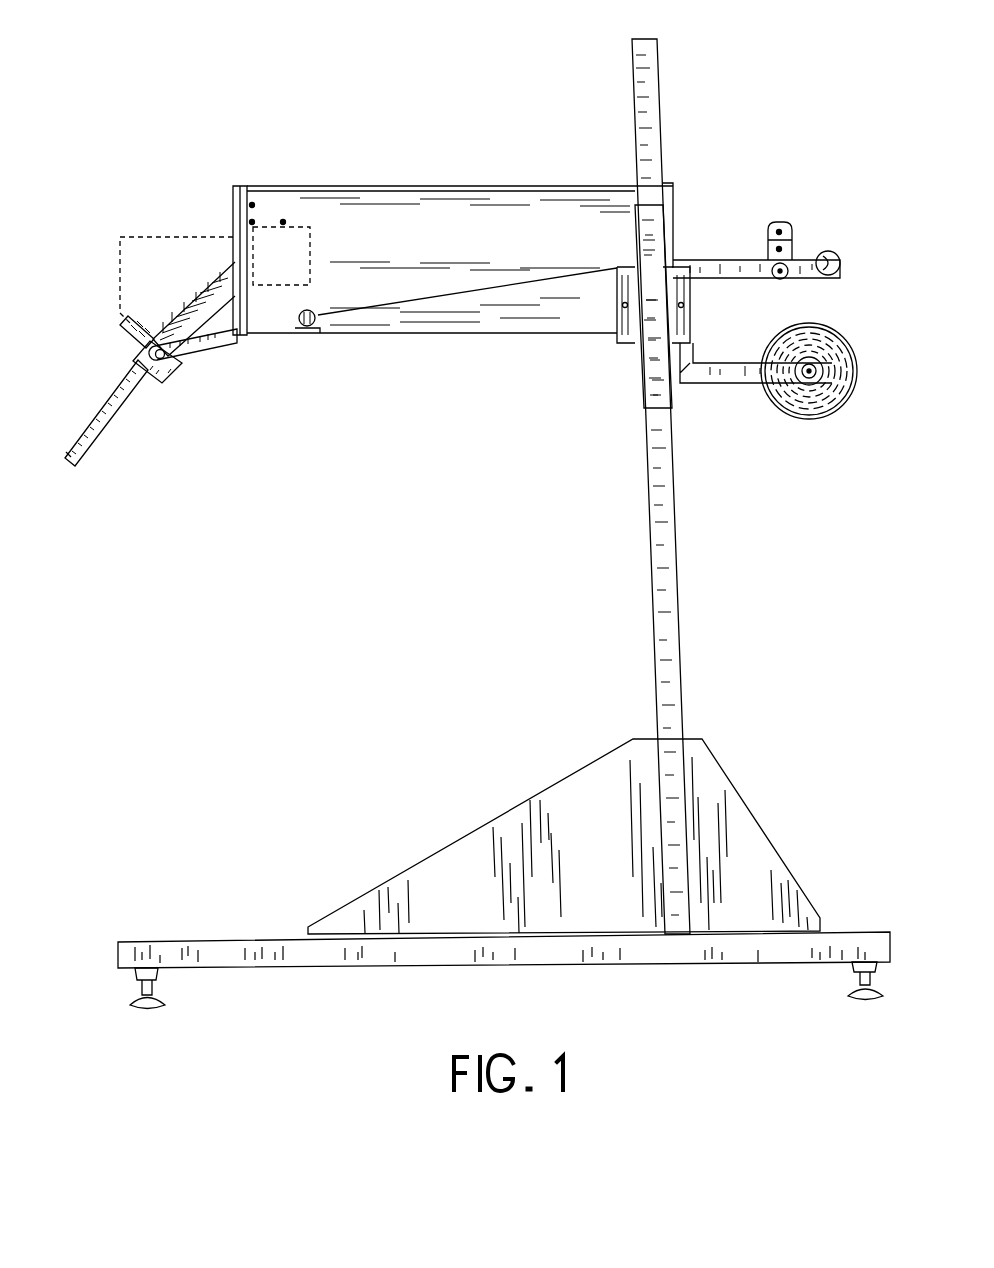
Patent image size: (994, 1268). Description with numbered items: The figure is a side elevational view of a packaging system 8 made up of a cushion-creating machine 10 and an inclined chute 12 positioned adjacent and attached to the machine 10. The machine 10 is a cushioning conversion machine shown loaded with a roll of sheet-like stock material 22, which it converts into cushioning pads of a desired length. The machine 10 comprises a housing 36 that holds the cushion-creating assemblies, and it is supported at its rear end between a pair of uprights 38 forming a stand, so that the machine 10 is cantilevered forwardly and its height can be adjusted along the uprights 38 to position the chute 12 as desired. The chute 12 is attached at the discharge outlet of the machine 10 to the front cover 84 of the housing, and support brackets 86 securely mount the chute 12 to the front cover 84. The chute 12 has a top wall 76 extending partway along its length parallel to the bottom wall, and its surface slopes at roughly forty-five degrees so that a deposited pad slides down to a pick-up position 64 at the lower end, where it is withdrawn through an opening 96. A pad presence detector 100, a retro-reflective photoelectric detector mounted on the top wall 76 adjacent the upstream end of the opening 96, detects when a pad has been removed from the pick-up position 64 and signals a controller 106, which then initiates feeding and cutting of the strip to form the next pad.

The packaging system 8 is at (230, 141).
The cushion-creating machine 10 is at (492, 159).
The inclined chute 12 is at (69, 459).
The roll of sheet-like stock material 22 is at (812, 421).
The housing 36 is at (398, 187).
The uprights 38 is at (646, 509).
The pick-up position 64 is at (117, 397).
The top wall 76 is at (232, 269).
The front cover 84 is at (233, 200).
The support brackets 86 is at (219, 338).
The opening 96 is at (97, 421).
The pad presence detector 100 is at (121, 349).
The controller 106 is at (312, 253).